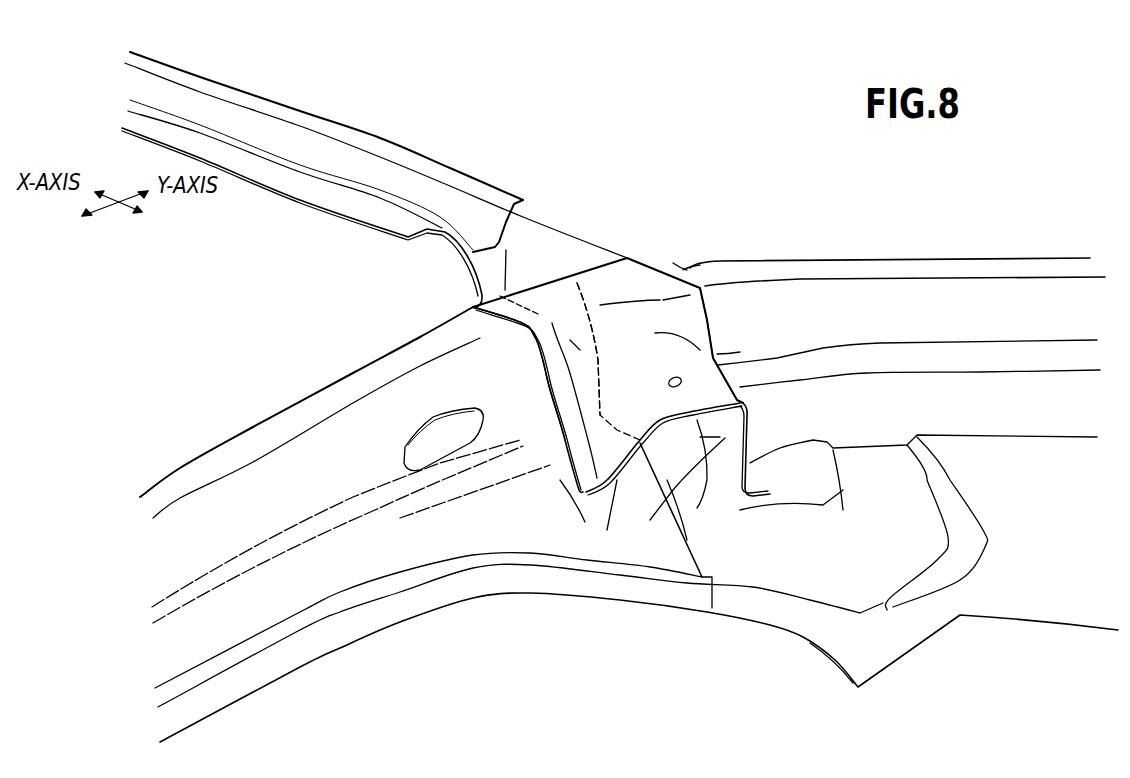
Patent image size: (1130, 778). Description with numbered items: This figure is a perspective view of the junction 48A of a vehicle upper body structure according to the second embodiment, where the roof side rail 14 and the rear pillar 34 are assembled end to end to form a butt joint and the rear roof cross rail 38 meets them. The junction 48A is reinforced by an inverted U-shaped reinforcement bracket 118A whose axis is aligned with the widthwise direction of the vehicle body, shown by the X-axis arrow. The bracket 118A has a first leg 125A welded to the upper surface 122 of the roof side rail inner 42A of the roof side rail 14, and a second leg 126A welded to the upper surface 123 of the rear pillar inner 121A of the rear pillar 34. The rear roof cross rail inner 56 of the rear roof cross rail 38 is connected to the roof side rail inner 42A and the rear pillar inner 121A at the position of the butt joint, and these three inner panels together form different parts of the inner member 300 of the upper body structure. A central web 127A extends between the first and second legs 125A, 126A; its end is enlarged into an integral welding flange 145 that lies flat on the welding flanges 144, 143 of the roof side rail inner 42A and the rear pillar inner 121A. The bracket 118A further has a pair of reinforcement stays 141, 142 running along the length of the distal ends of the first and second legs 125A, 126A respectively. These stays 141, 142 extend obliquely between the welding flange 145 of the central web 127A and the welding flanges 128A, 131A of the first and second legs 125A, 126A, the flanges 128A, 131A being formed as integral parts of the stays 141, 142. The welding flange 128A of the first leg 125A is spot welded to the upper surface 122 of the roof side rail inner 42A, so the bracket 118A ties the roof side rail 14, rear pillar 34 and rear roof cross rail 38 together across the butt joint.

The roof side rail 14 is at (160, 478).
The rear pillar 34 is at (1072, 255).
The rear roof cross rail 38 is at (392, 138).
The roof side rail inner 42A is at (282, 475).
The junction 48A is at (703, 230).
The rear roof cross rail inner 56 is at (533, 267).
The inverted U-shaped reinforcement bracket 118A is at (642, 262).
The rear pillar inner 121A is at (957, 305).
The upper surface 122 is at (467, 540).
The upper surface 123 is at (803, 538).
The first leg 125A is at (612, 425).
The second leg 126A is at (660, 480).
The central web 127A is at (700, 313).
The welding flange 128A is at (573, 400).
The welding flange 131A is at (753, 498).
The reinforcement stay 141 is at (553, 410).
The reinforcement stay 142 is at (740, 352).
The welding flange 143 is at (686, 271).
The welding flange 144 is at (473, 312).
The welding flange 145 is at (577, 287).
The inner member 300 is at (577, 287).